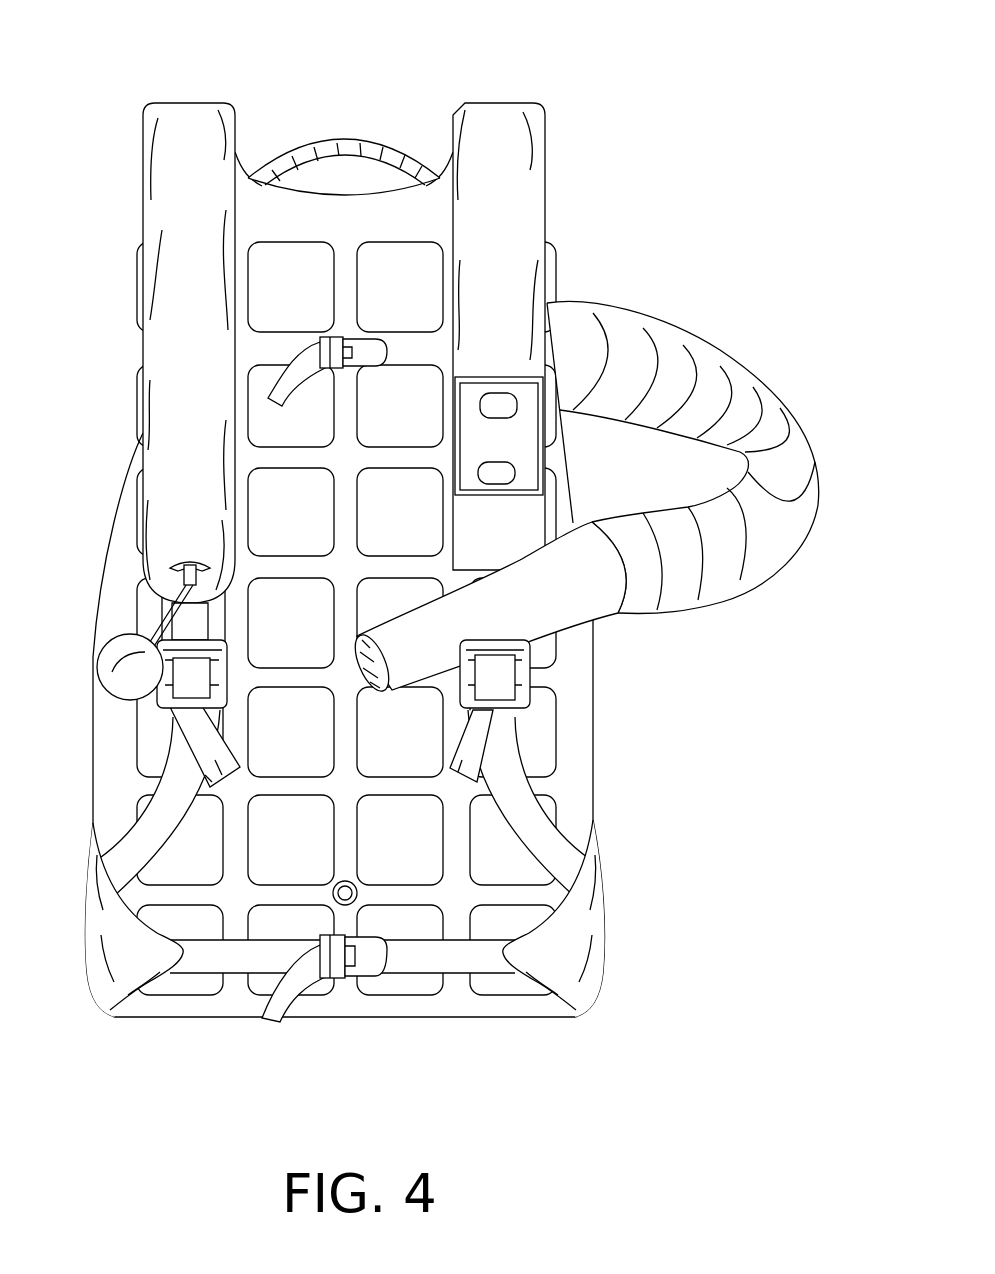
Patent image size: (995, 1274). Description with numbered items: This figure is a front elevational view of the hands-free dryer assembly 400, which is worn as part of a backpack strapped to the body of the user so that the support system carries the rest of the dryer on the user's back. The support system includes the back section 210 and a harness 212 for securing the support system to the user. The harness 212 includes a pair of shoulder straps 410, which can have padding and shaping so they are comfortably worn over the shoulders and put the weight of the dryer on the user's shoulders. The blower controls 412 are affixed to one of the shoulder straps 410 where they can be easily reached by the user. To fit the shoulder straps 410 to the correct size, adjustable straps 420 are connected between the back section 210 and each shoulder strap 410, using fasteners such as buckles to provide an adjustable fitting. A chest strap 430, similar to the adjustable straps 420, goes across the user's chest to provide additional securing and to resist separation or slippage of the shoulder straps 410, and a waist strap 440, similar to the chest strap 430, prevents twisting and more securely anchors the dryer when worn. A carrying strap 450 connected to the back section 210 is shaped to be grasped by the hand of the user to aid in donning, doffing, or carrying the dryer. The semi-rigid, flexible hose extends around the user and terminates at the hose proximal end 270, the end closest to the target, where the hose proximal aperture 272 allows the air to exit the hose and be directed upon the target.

The backpack assembly with hose 400 is at (638, 70).
The back section 210 is at (440, 218).
The harness 212 is at (143, 148).
The shoulder straps 410 is at (545, 165).
The blower controls 412 is at (533, 430).
The adjustable straps 420 is at (170, 787).
The chest strap 430 is at (393, 352).
The waist strap 440 is at (425, 975).
The carrying strap 450 is at (345, 138).
The hose proximal end 270 is at (487, 639).
The hose proximal aperture 272 is at (378, 697).